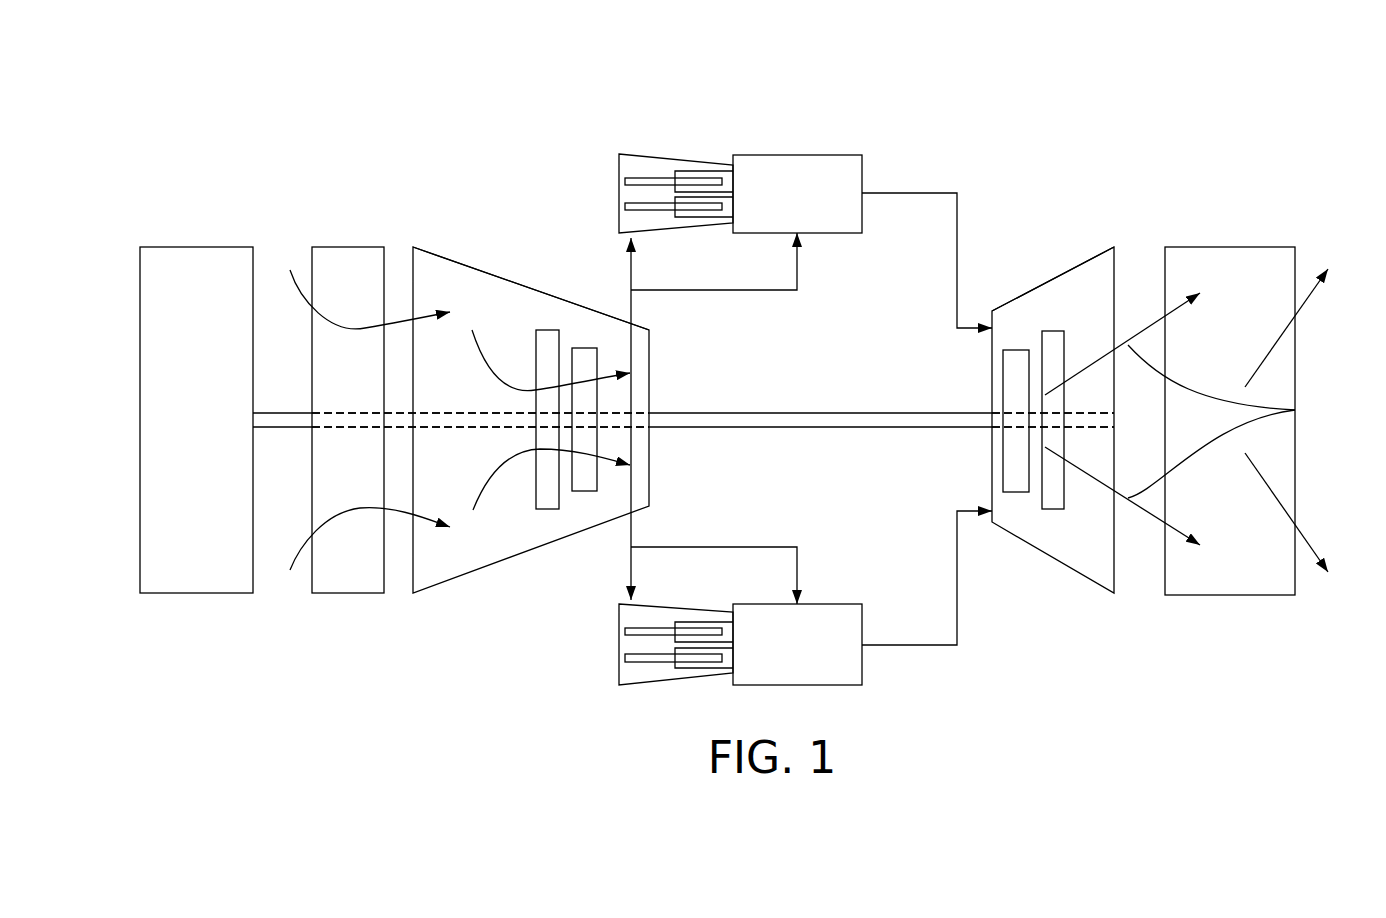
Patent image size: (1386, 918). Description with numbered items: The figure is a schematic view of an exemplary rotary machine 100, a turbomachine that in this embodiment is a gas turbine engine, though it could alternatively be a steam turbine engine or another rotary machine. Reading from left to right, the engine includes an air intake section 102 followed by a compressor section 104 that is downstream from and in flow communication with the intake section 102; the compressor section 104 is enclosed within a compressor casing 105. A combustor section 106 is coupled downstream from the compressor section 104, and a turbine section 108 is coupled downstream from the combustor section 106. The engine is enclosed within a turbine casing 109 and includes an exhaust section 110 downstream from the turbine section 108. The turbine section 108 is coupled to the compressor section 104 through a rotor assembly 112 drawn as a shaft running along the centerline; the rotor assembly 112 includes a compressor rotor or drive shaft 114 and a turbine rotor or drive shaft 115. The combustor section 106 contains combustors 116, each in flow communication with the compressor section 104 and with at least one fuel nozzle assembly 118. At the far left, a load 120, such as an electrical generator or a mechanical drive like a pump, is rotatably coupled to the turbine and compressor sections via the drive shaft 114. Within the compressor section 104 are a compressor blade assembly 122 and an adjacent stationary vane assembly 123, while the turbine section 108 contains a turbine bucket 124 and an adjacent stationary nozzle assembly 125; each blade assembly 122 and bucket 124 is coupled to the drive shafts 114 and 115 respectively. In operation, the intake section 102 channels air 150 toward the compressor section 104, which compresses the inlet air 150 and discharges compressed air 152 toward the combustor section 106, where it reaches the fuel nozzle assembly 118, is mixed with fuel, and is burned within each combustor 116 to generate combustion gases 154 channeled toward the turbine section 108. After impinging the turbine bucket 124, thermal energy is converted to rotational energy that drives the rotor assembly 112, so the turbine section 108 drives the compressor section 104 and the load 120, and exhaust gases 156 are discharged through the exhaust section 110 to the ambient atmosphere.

The rotary machine 100 is at (245, 113).
The air intake section 102 is at (347, 247).
The compressor section 104 is at (432, 250).
The compressor casing 105 is at (500, 270).
The combustor section 106 is at (1000, 150).
The turbine section 108 is at (1095, 253).
The turbine casing 109 is at (1028, 293).
The exhaust section 110 is at (1230, 247).
The rotor assembly 112 is at (758, 412).
The compressor drive shaft 114 is at (443, 420).
The turbine drive shaft 115 is at (1088, 413).
The combustor 116 is at (862, 420).
The fuel nozzle assembly 118 is at (662, 167).
The load 120 is at (197, 247).
The compressor blade assembly 122 is at (585, 491).
The stationary vane assembly 123 is at (548, 509).
The turbine bucket 124 is at (1018, 492).
The stationary nozzle assembly 125 is at (1050, 509).
The inlet air 150 is at (296, 293).
The compressed air 152 is at (631, 270).
The combustion gases 154 is at (1295, 410).
The exhaust gases 156 is at (1302, 306).